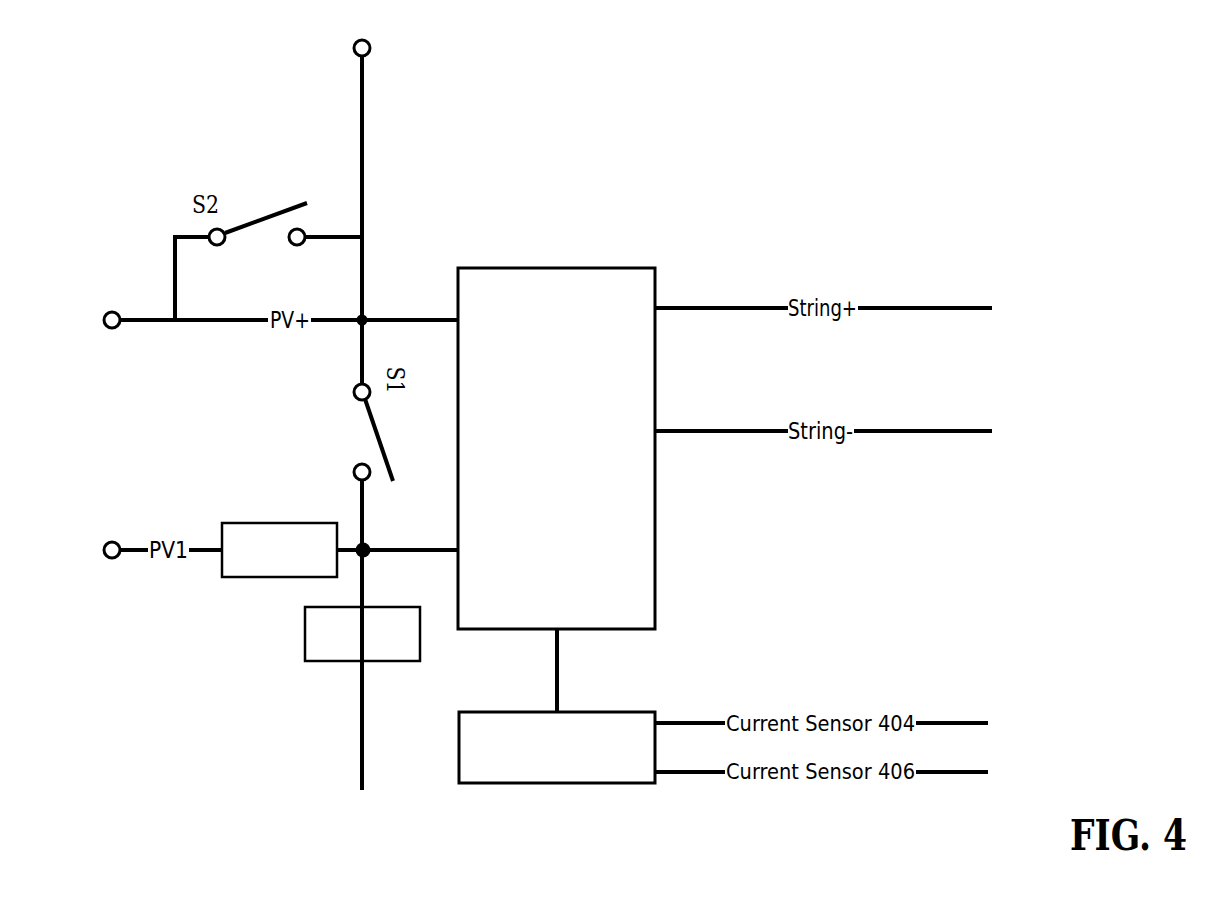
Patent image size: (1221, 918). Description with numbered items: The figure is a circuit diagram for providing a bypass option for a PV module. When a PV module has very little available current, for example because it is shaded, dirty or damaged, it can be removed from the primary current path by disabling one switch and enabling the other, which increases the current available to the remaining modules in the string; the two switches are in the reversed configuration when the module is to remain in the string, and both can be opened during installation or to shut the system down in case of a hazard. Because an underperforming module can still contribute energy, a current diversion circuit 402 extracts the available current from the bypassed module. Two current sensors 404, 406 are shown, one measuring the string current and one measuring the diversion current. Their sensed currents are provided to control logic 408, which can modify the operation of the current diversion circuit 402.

The current diversion circuit 402 is at (616, 268).
The current sensor 404 is at (255, 525).
The current sensor 406 is at (385, 608).
The control logic 408 is at (600, 710).